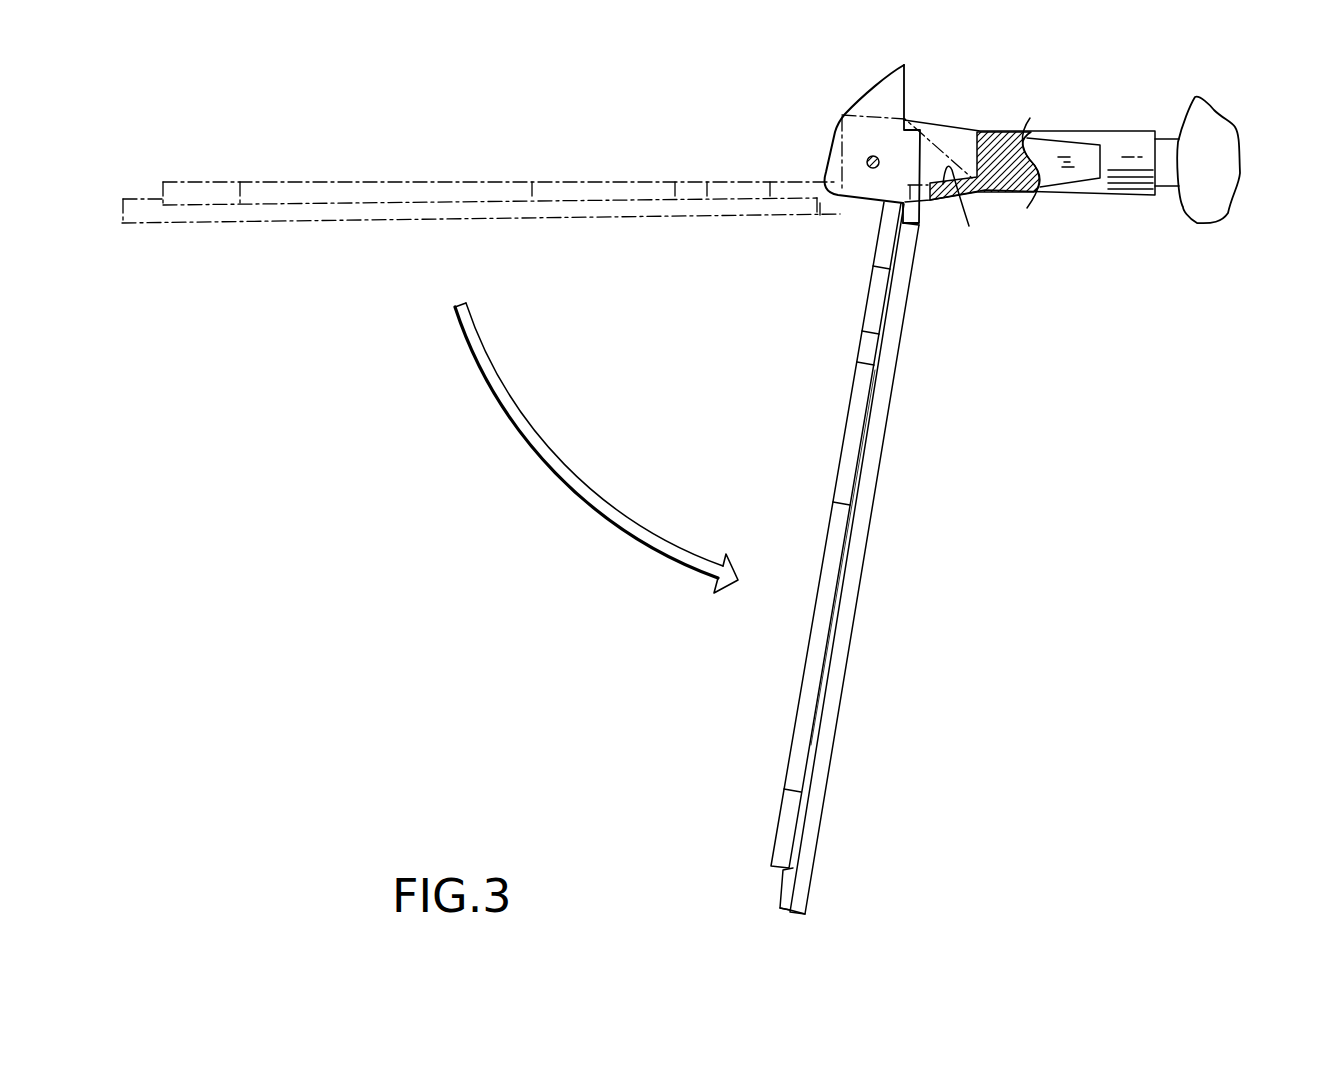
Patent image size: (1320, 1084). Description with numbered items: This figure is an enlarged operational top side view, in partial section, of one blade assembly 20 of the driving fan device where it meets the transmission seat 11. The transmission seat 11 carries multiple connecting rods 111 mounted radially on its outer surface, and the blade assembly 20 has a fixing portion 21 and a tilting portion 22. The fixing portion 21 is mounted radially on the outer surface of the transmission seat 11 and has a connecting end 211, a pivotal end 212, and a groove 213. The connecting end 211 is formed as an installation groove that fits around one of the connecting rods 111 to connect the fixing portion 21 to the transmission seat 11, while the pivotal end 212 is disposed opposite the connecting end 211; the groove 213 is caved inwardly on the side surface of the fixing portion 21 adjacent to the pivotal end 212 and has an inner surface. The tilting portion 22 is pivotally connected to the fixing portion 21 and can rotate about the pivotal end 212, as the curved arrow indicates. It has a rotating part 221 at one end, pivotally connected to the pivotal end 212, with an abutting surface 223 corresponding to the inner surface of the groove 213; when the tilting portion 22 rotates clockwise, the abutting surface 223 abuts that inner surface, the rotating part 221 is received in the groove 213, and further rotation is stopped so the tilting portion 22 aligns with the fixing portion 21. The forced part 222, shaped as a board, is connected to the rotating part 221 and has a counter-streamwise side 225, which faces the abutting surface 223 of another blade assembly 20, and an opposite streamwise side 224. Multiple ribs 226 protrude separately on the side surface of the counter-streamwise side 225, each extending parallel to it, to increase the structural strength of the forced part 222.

The transmission seat 11 is at (1210, 197).
The connecting rod 111 is at (1166, 177).
The blade assembly 20 is at (1073, 461).
The fixing portion 21 is at (1029, 172).
The connecting end 211 is at (1137, 135).
The pivotal end 212 is at (866, 160).
The groove 213 is at (966, 210).
The tilting portion 22 is at (843, 497).
The rotating part 221 is at (847, 100).
The forced part 222 is at (794, 918).
The abutting surface 223 is at (906, 94).
The streamwise side 224 is at (823, 818).
The counter-streamwise side 225 is at (786, 892).
The rib 226 is at (800, 762).